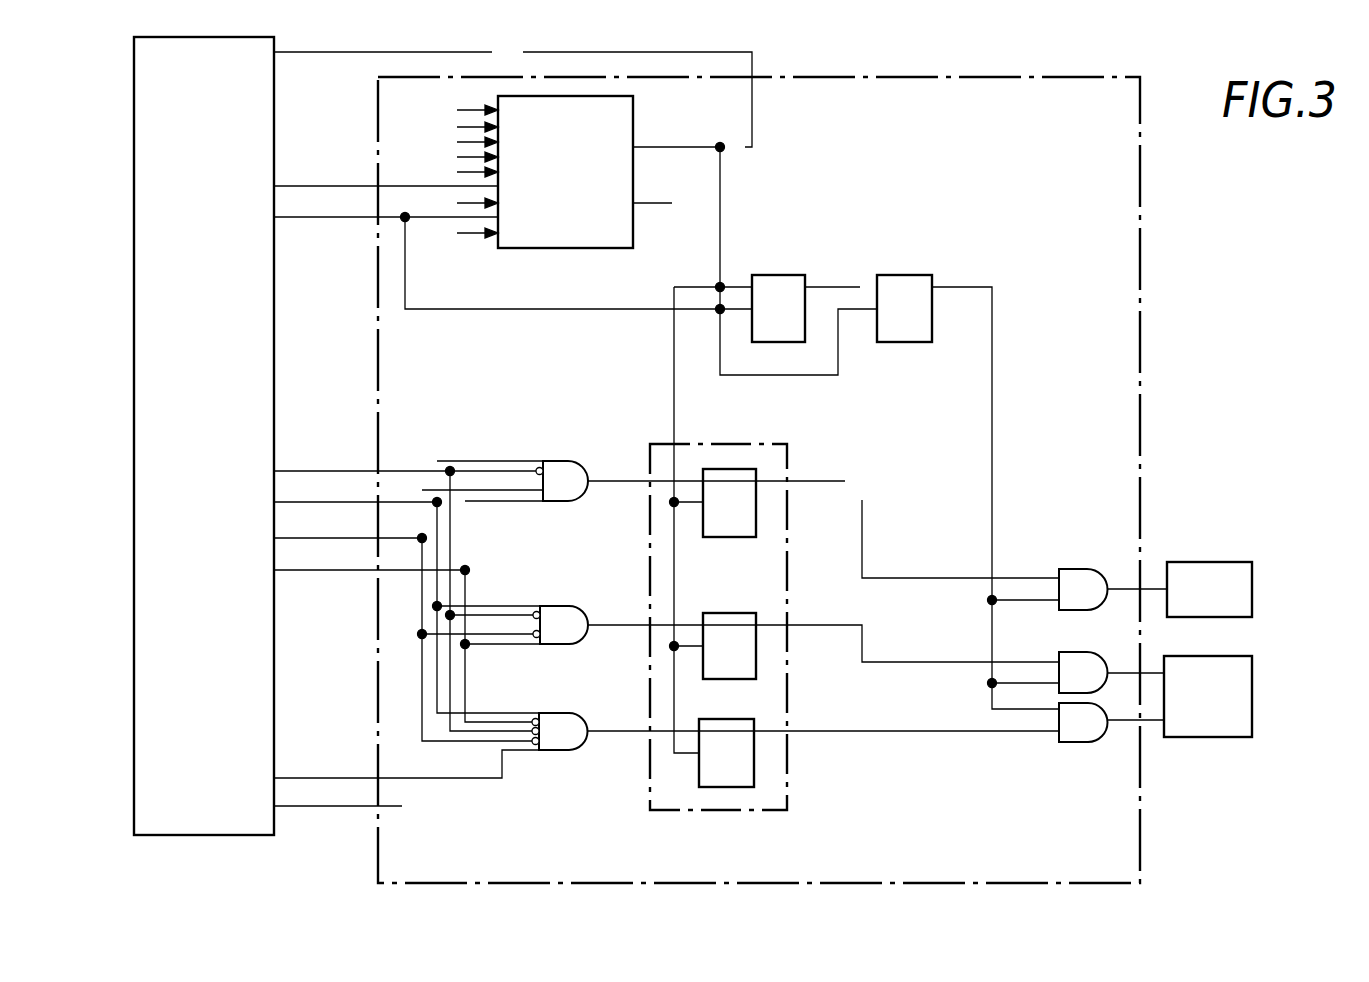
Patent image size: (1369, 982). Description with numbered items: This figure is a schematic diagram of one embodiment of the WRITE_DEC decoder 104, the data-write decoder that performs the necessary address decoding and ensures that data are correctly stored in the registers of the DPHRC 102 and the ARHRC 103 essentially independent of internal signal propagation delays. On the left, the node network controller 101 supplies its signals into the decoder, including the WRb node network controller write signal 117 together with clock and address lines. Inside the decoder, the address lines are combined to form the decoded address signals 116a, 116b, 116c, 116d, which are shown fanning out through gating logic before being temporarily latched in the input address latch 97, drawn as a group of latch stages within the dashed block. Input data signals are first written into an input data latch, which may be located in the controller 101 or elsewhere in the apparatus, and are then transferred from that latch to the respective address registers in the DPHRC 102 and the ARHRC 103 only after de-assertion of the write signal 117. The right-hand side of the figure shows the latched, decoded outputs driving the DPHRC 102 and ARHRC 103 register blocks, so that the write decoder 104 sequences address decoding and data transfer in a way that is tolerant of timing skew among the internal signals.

The controller 101 is at (172, 836).
The WRITE_DEC decoder 104 is at (1138, 848).
The WRb node network controller write signal 117 is at (433, 186).
The decoded address signal 116a is at (402, 500).
The decoded address signal 116b is at (406, 540).
The decoded address signal 116c is at (396, 572).
The decoded address signal 116d is at (450, 780).
The input address latch 97 is at (688, 812).
The ARHRC 103 is at (1253, 575).
The DPHRC 102 is at (1253, 722).